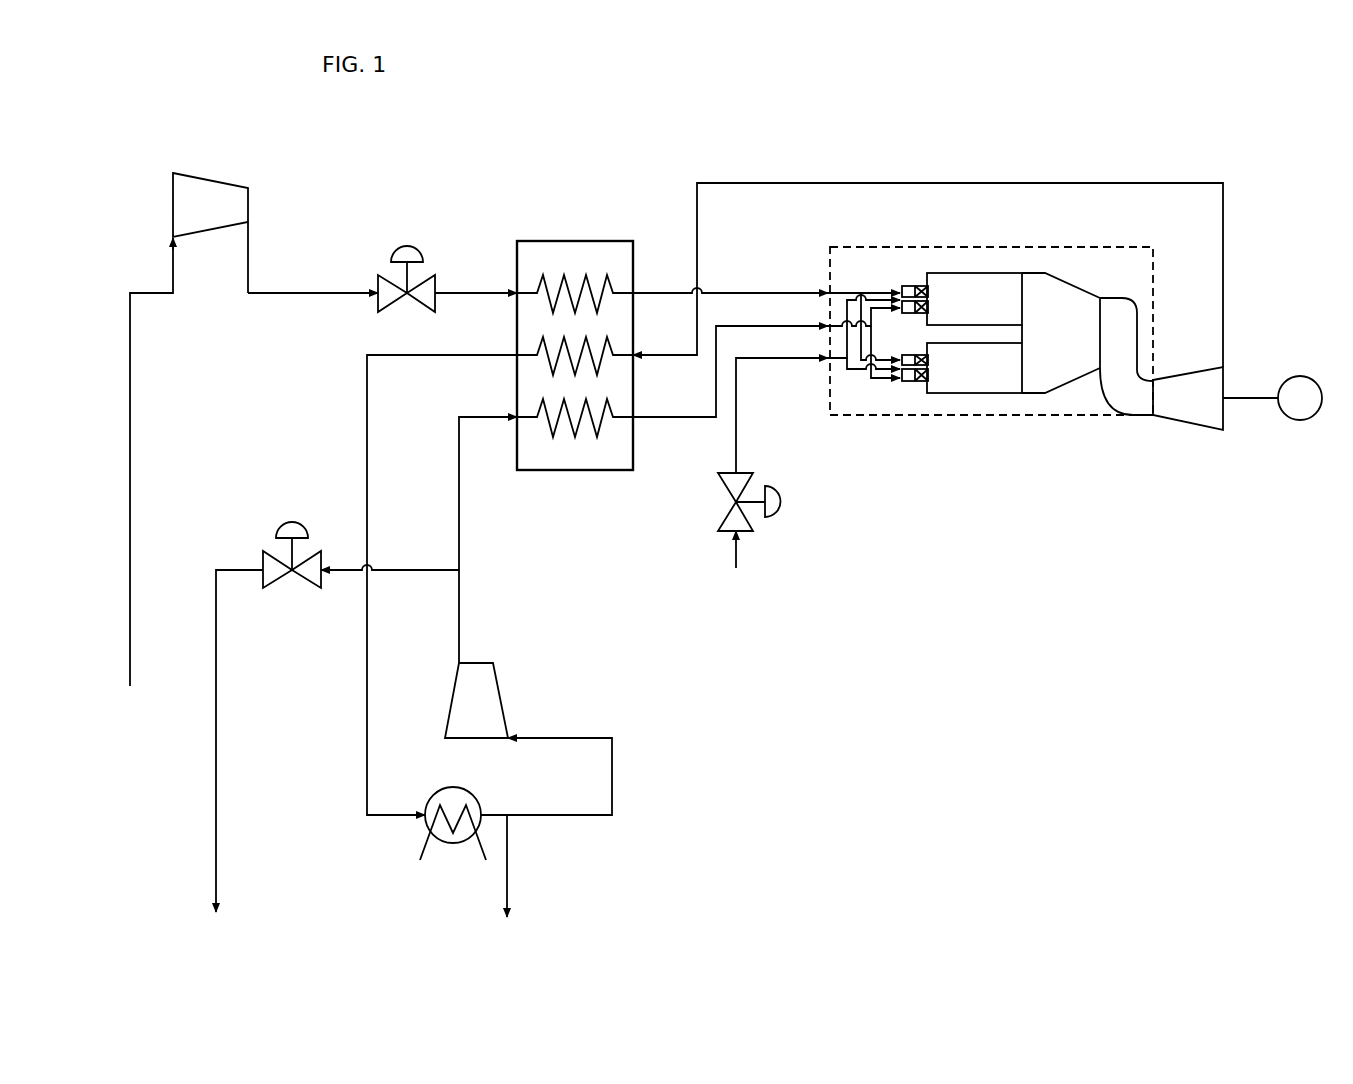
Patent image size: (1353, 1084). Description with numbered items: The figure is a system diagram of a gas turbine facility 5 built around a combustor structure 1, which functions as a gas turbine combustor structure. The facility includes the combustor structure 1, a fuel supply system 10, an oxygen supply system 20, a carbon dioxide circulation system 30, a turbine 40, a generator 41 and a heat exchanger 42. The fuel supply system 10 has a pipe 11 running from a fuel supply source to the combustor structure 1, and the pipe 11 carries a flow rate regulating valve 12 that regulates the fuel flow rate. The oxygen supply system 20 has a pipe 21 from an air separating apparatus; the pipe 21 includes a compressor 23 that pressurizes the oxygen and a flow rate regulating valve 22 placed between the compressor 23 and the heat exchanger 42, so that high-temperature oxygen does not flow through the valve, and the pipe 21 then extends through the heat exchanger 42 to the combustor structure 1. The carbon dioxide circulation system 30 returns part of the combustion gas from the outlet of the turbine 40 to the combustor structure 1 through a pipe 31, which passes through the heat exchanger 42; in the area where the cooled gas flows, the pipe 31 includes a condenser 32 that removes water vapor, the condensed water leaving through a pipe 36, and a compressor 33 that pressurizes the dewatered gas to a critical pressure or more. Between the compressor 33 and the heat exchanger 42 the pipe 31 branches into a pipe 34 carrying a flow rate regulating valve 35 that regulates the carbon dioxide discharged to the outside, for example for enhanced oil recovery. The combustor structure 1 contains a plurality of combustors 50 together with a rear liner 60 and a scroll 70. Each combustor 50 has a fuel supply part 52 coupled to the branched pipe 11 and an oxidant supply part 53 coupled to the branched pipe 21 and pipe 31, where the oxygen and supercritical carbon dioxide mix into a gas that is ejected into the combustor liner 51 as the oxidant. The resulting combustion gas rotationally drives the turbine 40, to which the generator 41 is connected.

The combustor structure 1 is at (1068, 244).
The gas turbine facility 5 is at (567, 155).
The fuel supply system 10 is at (699, 532).
The pipe 11 is at (740, 437).
The flow rate regulating valve 12 is at (745, 535).
The oxygen supply system 20 is at (242, 352).
The pipe 21 is at (290, 296).
The flow rate regulating valve 22 is at (378, 280).
The compressor 23 is at (218, 182).
The carbon dioxide circulation system 30 is at (513, 585).
The pipe 31 is at (803, 183).
The condenser 32 is at (432, 795).
The compressor 33 is at (500, 698).
The pipe 34 is at (412, 575).
The flow rate regulating valve 35 is at (263, 555).
The pipe 36 is at (512, 862).
The turbine 40 is at (1188, 425).
The generator 41 is at (1297, 421).
The heat exchanger 42 is at (597, 241).
The combustor 50 is at (863, 334).
The combustor liner 51 is at (976, 273).
The fuel supply part 52 is at (900, 287).
The oxidant supply part 53 is at (913, 290).
The rear liner 60 is at (1065, 395).
The scroll 70 is at (1112, 412).